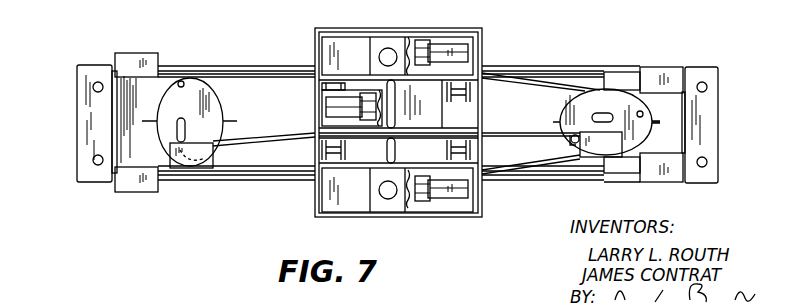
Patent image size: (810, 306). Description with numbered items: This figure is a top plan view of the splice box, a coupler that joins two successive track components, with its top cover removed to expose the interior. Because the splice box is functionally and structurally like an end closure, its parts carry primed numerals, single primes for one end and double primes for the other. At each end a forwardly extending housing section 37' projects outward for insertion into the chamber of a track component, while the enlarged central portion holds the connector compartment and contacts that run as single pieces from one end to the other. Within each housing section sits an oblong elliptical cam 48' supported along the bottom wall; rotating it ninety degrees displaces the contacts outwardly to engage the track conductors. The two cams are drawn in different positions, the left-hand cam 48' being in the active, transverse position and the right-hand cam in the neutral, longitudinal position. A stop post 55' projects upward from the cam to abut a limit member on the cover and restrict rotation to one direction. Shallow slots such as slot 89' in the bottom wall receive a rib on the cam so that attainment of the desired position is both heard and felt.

The forwardly extending housing section 37' is at (67, 123).
The elliptical cam 48' is at (200, 93).
The stop post 55' is at (165, 49).
The slot or depression 89' is at (628, 102).